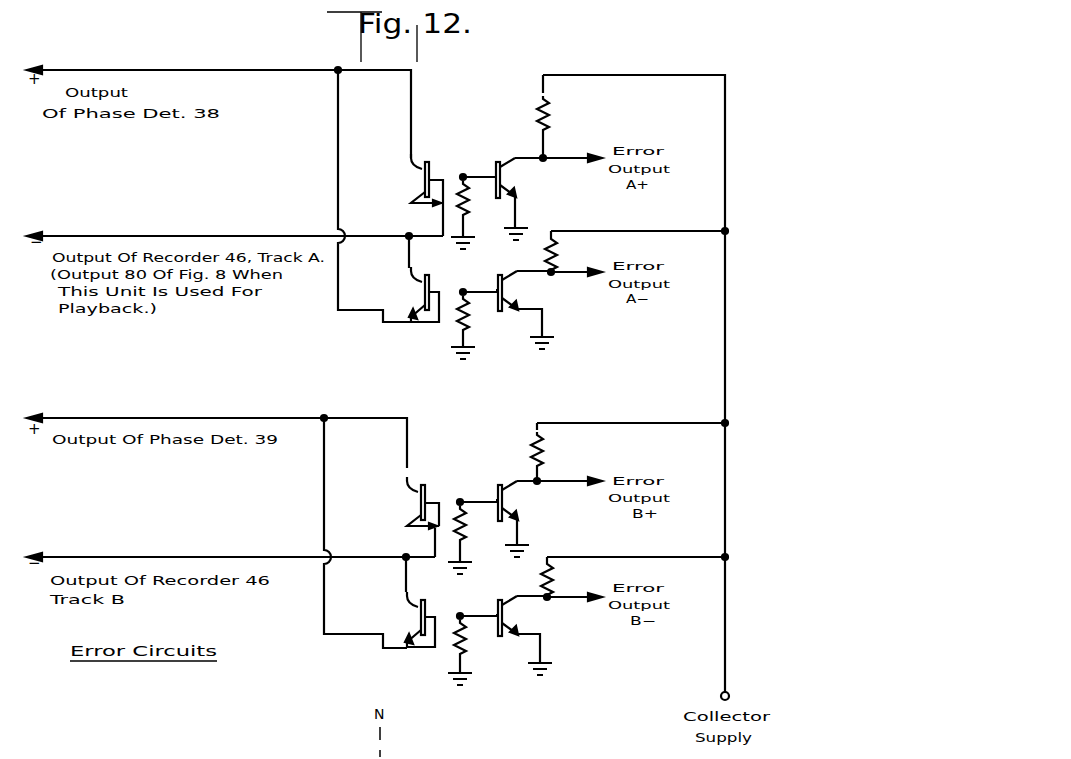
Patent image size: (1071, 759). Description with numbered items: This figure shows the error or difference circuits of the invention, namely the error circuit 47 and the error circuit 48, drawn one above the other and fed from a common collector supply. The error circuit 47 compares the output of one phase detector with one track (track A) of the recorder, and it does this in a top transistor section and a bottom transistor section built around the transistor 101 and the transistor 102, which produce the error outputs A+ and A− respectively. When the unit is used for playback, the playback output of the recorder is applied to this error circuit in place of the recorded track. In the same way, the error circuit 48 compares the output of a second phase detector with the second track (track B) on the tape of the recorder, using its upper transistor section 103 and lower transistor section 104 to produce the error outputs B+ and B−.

The error circuit 47 is at (560, 217).
The error circuit 48 is at (558, 554).
The transistor 101 is at (495, 165).
The transistor 102 is at (497, 279).
The upper transistor section 103 is at (497, 492).
The lower transistor section 104 is at (497, 607).